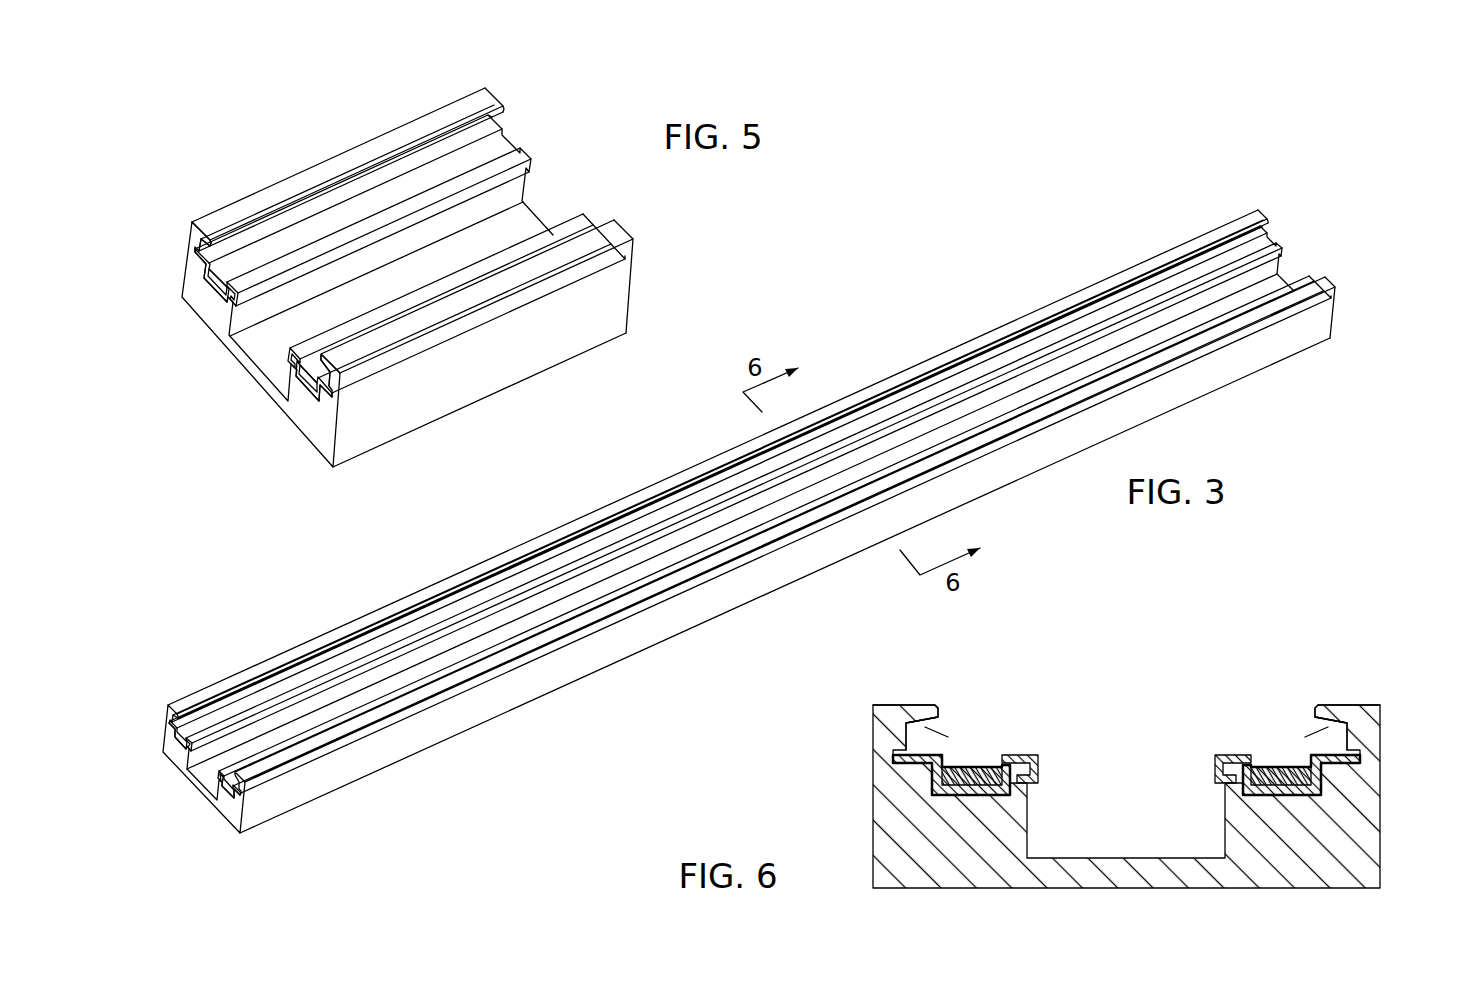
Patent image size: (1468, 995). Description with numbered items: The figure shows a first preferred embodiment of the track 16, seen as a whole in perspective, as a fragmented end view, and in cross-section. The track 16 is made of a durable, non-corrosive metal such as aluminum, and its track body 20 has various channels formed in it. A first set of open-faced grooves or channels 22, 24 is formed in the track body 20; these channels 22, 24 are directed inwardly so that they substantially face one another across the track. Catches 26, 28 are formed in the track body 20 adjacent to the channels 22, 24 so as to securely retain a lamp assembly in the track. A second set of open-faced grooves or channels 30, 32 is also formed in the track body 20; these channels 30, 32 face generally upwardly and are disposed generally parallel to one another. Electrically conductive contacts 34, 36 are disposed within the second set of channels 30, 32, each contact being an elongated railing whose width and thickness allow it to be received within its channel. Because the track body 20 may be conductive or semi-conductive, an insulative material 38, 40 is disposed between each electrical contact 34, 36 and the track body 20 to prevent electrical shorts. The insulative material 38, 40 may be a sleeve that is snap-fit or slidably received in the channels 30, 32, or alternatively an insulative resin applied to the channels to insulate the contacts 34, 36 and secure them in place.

In FIG. 5, the track 16 is at (268, 125).
In FIG. 3, the track 16 is at (917, 363).
In FIG. 6, the track 16 is at (1360, 680).
In FIG. 5, the track body 20 is at (320, 440).
In FIG. 6, the track body 20 is at (933, 870).
In FIG. 5, the first open-faced channel 22 is at (195, 245).
In FIG. 6, the first open-faced channel 22 is at (912, 735).
In FIG. 5, the first open-faced channel 24 is at (335, 382).
In FIG. 6, the first open-faced channel 24 is at (1342, 733).
In FIG. 6, the catch 26 is at (947, 737).
In FIG. 6, the catch 28 is at (1320, 737).
In FIG. 5, the second open-faced channel 30 is at (217, 300).
In FIG. 6, the second open-faced channel 30 is at (975, 793).
In FIG. 6, the second open-faced channel 32 is at (1283, 793).
In FIG. 5, the electrically conductive contact 34 is at (217, 288).
In FIG. 6, the electrically conductive contact 34 is at (973, 767).
In FIG. 5, the electrically conductive contact 36 is at (303, 385).
In FIG. 6, the electrically conductive contact 36 is at (1285, 765).
In FIG. 6, the insulative material 38 is at (1038, 767).
In FIG. 6, the insulative material 40 is at (1217, 762).